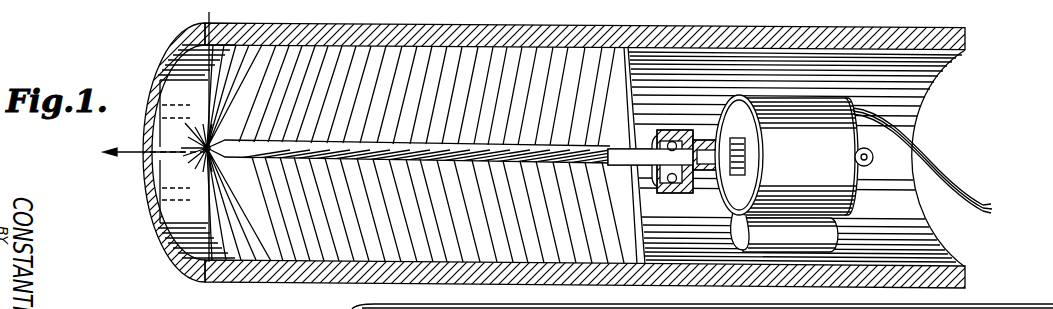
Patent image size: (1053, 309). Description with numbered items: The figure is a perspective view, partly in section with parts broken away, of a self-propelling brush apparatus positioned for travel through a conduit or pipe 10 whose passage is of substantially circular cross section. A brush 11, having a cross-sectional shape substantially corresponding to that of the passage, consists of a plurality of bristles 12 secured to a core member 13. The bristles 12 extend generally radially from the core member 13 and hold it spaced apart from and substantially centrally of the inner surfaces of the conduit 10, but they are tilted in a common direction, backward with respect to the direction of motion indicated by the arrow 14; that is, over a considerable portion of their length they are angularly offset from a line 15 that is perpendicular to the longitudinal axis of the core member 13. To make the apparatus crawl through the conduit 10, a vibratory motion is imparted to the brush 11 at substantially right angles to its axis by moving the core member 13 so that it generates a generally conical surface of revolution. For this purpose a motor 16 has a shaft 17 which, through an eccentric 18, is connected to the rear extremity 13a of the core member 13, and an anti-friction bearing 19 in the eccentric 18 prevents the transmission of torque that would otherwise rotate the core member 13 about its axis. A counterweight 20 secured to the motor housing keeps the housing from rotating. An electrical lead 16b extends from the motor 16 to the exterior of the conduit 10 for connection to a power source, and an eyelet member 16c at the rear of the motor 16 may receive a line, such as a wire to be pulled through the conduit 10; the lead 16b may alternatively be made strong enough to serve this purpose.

The conduit or pipe 10 is at (270, 277).
The brush 11 is at (222, 233).
The bristles 12 is at (257, 51).
The core member 13 is at (250, 158).
The rear extremity of the core member 13a is at (640, 172).
The arrow 14 is at (127, 147).
The line perpendicular to the longitudinal axis of the core member 15 is at (198, 83).
The motor 16 is at (860, 141).
The electrical lead 16b is at (950, 188).
The eyelet member 16c is at (873, 160).
The shaft 17 is at (708, 182).
The eccentric 18 is at (675, 130).
The anti-friction bearing 19 is at (652, 142).
The counterweight 20 is at (738, 240).